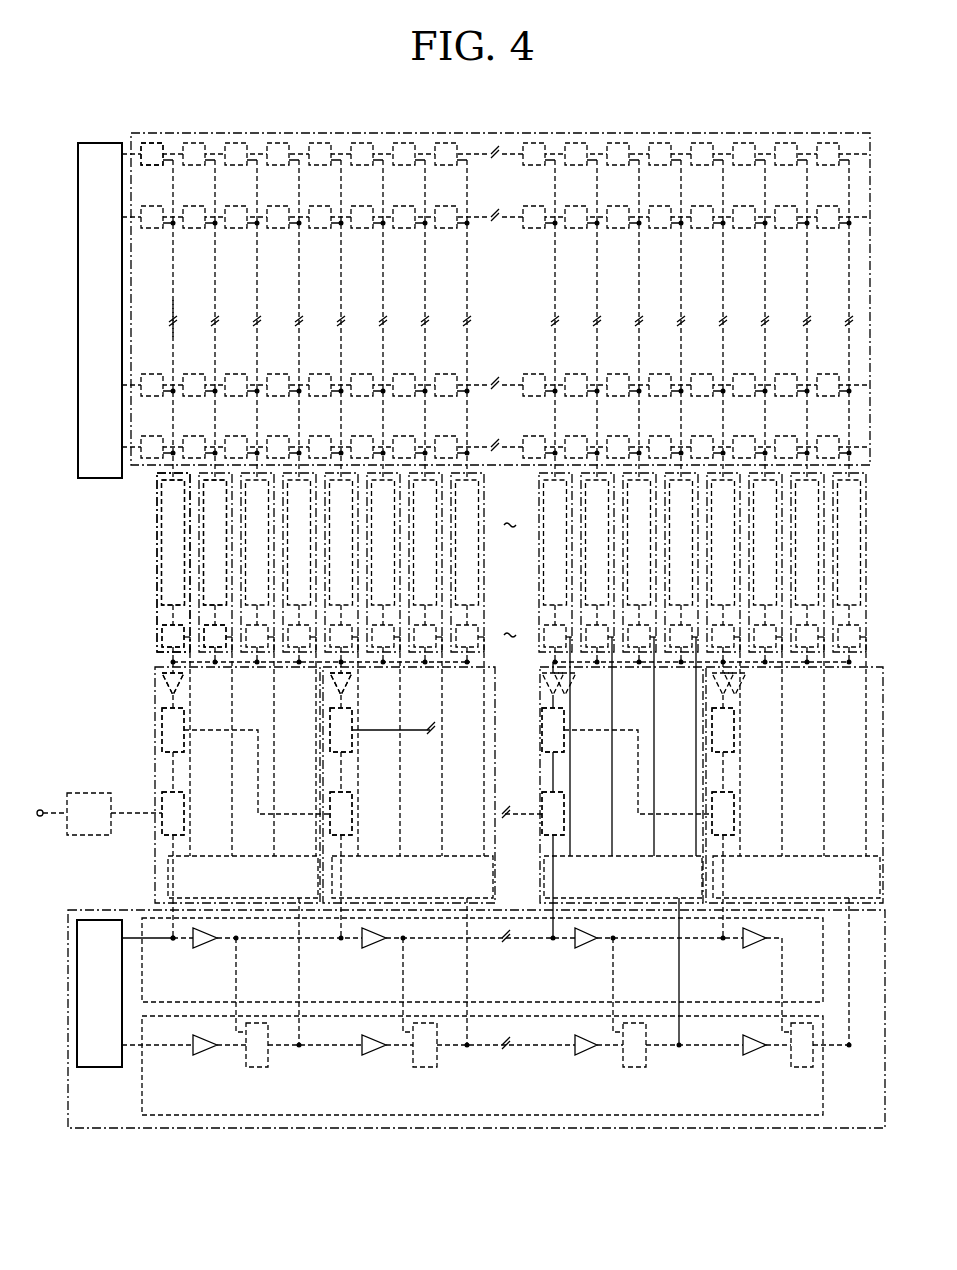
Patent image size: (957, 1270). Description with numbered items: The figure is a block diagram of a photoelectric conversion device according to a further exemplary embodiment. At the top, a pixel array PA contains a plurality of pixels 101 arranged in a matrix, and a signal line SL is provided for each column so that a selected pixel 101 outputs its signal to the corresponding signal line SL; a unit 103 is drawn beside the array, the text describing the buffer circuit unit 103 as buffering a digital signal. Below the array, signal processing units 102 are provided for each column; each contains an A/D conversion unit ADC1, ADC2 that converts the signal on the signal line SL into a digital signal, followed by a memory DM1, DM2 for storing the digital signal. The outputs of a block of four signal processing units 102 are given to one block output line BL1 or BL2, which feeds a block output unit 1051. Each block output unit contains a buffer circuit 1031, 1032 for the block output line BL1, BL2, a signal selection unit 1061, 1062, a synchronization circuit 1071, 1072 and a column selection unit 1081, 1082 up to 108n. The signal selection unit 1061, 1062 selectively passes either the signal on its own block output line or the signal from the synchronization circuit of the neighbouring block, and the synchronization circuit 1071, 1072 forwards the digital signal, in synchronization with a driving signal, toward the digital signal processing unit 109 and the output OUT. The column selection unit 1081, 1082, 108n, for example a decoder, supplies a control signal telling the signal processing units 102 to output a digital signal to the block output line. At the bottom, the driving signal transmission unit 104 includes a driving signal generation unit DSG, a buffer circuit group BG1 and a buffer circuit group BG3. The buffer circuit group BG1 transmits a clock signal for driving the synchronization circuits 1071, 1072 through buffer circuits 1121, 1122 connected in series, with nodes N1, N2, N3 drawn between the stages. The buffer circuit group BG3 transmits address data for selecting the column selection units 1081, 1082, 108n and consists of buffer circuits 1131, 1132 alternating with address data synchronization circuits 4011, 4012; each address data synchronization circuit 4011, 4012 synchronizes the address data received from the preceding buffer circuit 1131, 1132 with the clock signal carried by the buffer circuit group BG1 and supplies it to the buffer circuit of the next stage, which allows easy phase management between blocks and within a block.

The pixel 101 is at (152, 143).
The signal processing unit 102 is at (157, 500).
The buffer circuit unit 103 is at (118, 143).
The driving signal transmission unit 104 is at (828, 1128).
The digital signal processing unit 109 is at (82, 793).
The buffer circuit unit 1031 is at (162, 680).
The buffer circuit unit 1032 is at (352, 680).
The block output unit 1051 is at (155, 853).
The signal selection unit 1061 is at (162, 722).
The signal selection unit 1062 is at (353, 745).
The synchronization circuit 1071 is at (162, 805).
The synchronization circuit 1072 is at (353, 813).
The column selection unit 1081 is at (168, 885).
The column selection unit 1082 is at (437, 900).
The column selection unit 108n is at (808, 856).
The buffer circuit 1121 is at (205, 948).
The buffer circuit 1122 is at (375, 948).
The buffer circuit 1131 is at (205, 1055).
The buffer circuit 1132 is at (375, 1055).
The address data synchronization circuit 4011 is at (257, 1067).
The address data synchronization circuit 4012 is at (425, 1067).
The node N1 is at (173, 940).
The node N2 is at (238, 938).
The node N3 is at (403, 940).
The buffer circuit group BG1 is at (823, 965).
The buffer circuit group BG3 is at (823, 1085).
The pixel array PA is at (238, 133).
The signal line SL is at (175, 292).
The block output line BL1 is at (210, 667).
The block output line BL2 is at (462, 667).
The AD converter ADC1 is at (162, 540).
The AD converter ADC2 is at (203, 572).
The digital memory DM1 is at (162, 637).
The digital memory DM2 is at (204, 630).
The output terminal OUT is at (40, 816).
The driving signal generation unit DSG is at (97, 1067).